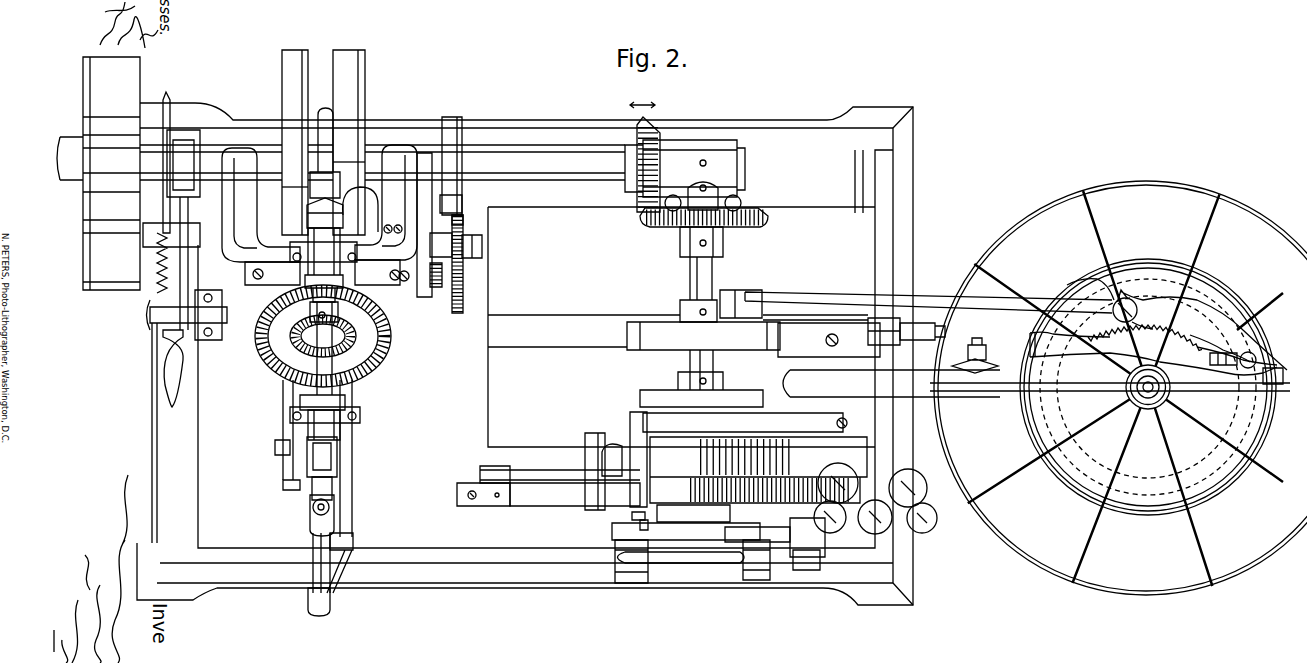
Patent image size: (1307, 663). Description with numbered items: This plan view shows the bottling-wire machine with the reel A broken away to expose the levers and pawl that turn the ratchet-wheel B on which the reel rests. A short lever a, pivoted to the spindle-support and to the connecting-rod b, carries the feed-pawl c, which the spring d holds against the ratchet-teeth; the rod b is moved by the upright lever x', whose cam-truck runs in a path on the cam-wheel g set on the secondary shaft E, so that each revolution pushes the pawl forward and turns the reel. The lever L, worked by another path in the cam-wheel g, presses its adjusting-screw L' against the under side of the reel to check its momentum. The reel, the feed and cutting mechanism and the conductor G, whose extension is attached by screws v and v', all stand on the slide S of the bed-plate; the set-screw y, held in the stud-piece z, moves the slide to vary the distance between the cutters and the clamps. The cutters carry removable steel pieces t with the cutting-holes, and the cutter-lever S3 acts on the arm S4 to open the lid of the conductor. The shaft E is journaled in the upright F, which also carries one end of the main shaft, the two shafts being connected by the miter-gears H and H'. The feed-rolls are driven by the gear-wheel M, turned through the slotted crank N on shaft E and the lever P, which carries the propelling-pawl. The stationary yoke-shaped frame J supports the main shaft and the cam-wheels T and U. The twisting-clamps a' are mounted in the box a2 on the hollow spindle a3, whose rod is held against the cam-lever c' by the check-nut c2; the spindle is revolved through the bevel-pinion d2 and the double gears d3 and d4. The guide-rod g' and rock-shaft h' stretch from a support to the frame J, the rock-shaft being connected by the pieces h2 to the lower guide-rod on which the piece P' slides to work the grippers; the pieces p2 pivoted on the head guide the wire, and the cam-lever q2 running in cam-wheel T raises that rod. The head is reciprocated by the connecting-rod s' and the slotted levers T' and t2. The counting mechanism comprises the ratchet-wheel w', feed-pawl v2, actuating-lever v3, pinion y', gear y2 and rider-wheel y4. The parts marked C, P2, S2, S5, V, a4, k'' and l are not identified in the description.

The reel A is at (1120, 379).
The ratchet-wheel B is at (1148, 387).
The rod C is at (681, 556).
The secondary shaft E is at (426, 267).
The upright F is at (685, 175).
The conductor G is at (560, 471).
The miter-gear H is at (671, 201).
The miter-gear H' is at (708, 208).
The stationary frame J is at (319, 215).
The lever L is at (1017, 348).
The adjusting-screw L' is at (1277, 369).
The gear-wheel M is at (340, 118).
The slotted crank N is at (686, 531).
The lever P is at (466, 336).
The piece P' is at (178, 156).
The wheel P2 is at (98, 173).
The slide S is at (681, 327).
The bar S2 is at (680, 432).
The cutter-lever S3 is at (630, 440).
The arm S4 is at (614, 440).
The bar S5 is at (701, 389).
The cam-wheel T is at (349, 128).
The cam-lever T' is at (349, 153).
The cam-wheel U is at (291, 50).
The bar lower part V is at (295, 162).
The short lever a is at (1145, 338).
The twisting-clamps a' is at (470, 494).
The box a2 is at (338, 455).
The hollow spindle a3 is at (330, 358).
The link plate a4 is at (322, 515).
The connecting-rod b is at (927, 293).
The feed-pawl c is at (1200, 330).
The cam-lever c' is at (352, 145).
The check-nut c2 is at (305, 214).
The spring d is at (310, 312).
The bevel-pinion d2 is at (283, 294).
The gear d3 is at (351, 334).
The gear d4 is at (268, 370).
The cam-wheel g is at (703, 336).
The guide-rod g' is at (307, 561).
The rock-shaft h' is at (358, 458).
The pieces h2 is at (356, 540).
The bracket k'' is at (612, 525).
The rod l is at (891, 383).
The pieces p2 is at (288, 425).
The cam-lever q2 is at (372, 222).
The connecting-rod s' is at (302, 397).
The pieces of steel t is at (638, 522).
The slotted lever t2 is at (278, 492).
The screw v is at (484, 510).
The screw v' is at (452, 166).
The feed-pawl v2 is at (398, 289).
The actuating-lever v3 is at (462, 200).
The ratchet-wheel w' is at (429, 234).
The upright lever x' is at (752, 304).
The set-screw y is at (922, 324).
The pinion y' is at (465, 214).
The gear y2 is at (465, 264).
The rider-wheel y4 is at (437, 288).
The stud-piece z is at (884, 331).